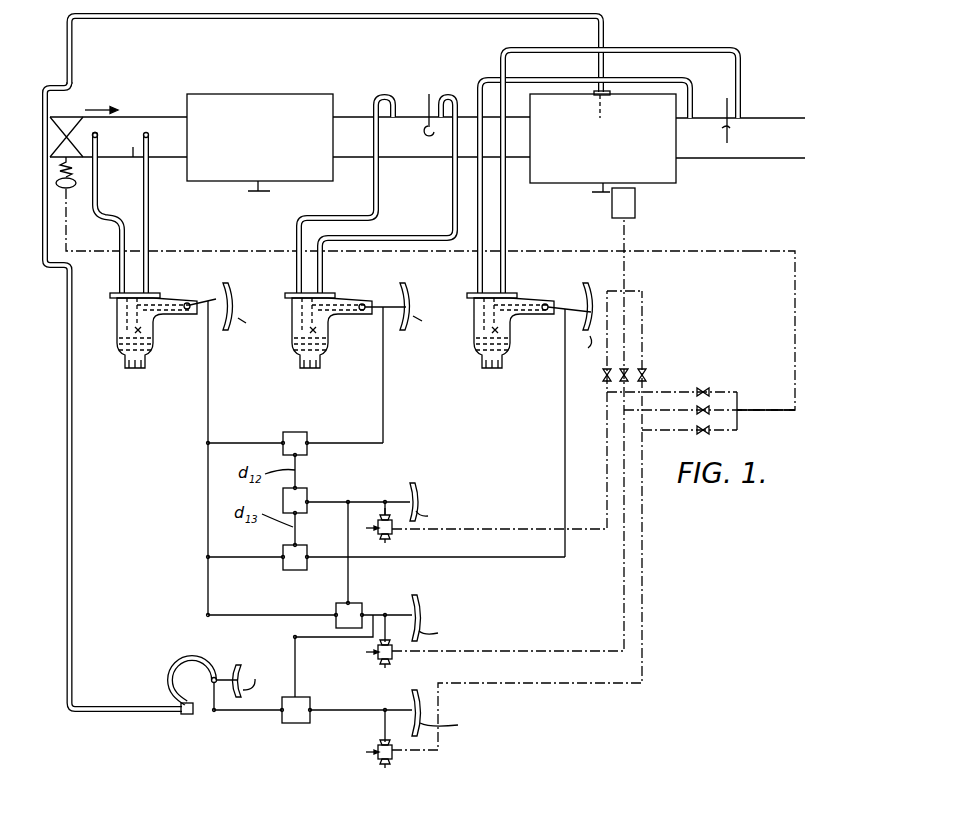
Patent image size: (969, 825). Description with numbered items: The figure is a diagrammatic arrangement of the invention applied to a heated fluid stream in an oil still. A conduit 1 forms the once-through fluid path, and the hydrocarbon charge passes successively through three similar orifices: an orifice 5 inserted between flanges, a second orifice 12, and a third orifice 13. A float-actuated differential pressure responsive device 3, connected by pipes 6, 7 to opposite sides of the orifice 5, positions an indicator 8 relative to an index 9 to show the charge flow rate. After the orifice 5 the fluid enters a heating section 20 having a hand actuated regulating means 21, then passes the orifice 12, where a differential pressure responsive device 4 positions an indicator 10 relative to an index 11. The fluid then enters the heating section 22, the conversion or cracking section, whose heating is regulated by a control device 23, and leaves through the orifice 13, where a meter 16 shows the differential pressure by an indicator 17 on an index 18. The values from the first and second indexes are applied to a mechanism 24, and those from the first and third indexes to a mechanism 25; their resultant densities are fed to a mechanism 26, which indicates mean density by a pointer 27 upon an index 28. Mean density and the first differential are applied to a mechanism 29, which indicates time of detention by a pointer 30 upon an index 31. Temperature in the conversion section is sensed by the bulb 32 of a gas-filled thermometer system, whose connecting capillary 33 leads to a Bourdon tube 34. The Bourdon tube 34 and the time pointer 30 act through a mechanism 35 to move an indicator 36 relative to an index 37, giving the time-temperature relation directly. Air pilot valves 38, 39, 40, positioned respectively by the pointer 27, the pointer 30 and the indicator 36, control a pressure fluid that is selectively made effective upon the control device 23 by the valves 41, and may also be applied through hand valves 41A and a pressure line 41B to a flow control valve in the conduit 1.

The conduit 1 is at (158, 159).
The differential pressure responsive device 3 is at (150, 330).
The differential pressure responsive device 4 is at (330, 326).
The orifice 5 is at (128, 122).
The pipe 6 is at (117, 226).
The pipe 7 is at (150, 226).
The indicator 8 is at (213, 299).
The index 9 is at (236, 302).
The indicator 10 is at (392, 300).
The index 11 is at (411, 306).
The orifice 12 is at (419, 115).
The orifice 13 is at (714, 120).
The meter 16 is at (512, 326).
The indicator 17 is at (577, 300).
The index 18 is at (593, 302).
The heating section 20 is at (242, 94).
The hand actuated regulating means 21 is at (268, 192).
The heating section 22 is at (576, 184).
The control device 23 is at (638, 196).
The mechanism 24 is at (302, 433).
The mechanism 25 is at (302, 546).
The mechanism 26 is at (302, 489).
The pointer 27 is at (402, 501).
The index 28 is at (417, 503).
The mechanism 29 is at (355, 604).
The pointer 30 is at (388, 612).
The index 31 is at (416, 614).
The bulb 32 is at (612, 112).
The connecting capillary 33 is at (604, 26).
The Bourdon tube 34 is at (192, 657).
The mechanism 35 is at (305, 698).
The indicator 36 is at (397, 710).
The index 37 is at (421, 700).
The air pilot valve 38 is at (391, 539).
The air pilot valve 39 is at (391, 664).
The air pilot valve 40 is at (391, 764).
The valves 41 is at (635, 337).
The hand valves 41A is at (701, 404).
The pressure line 41B is at (766, 403).